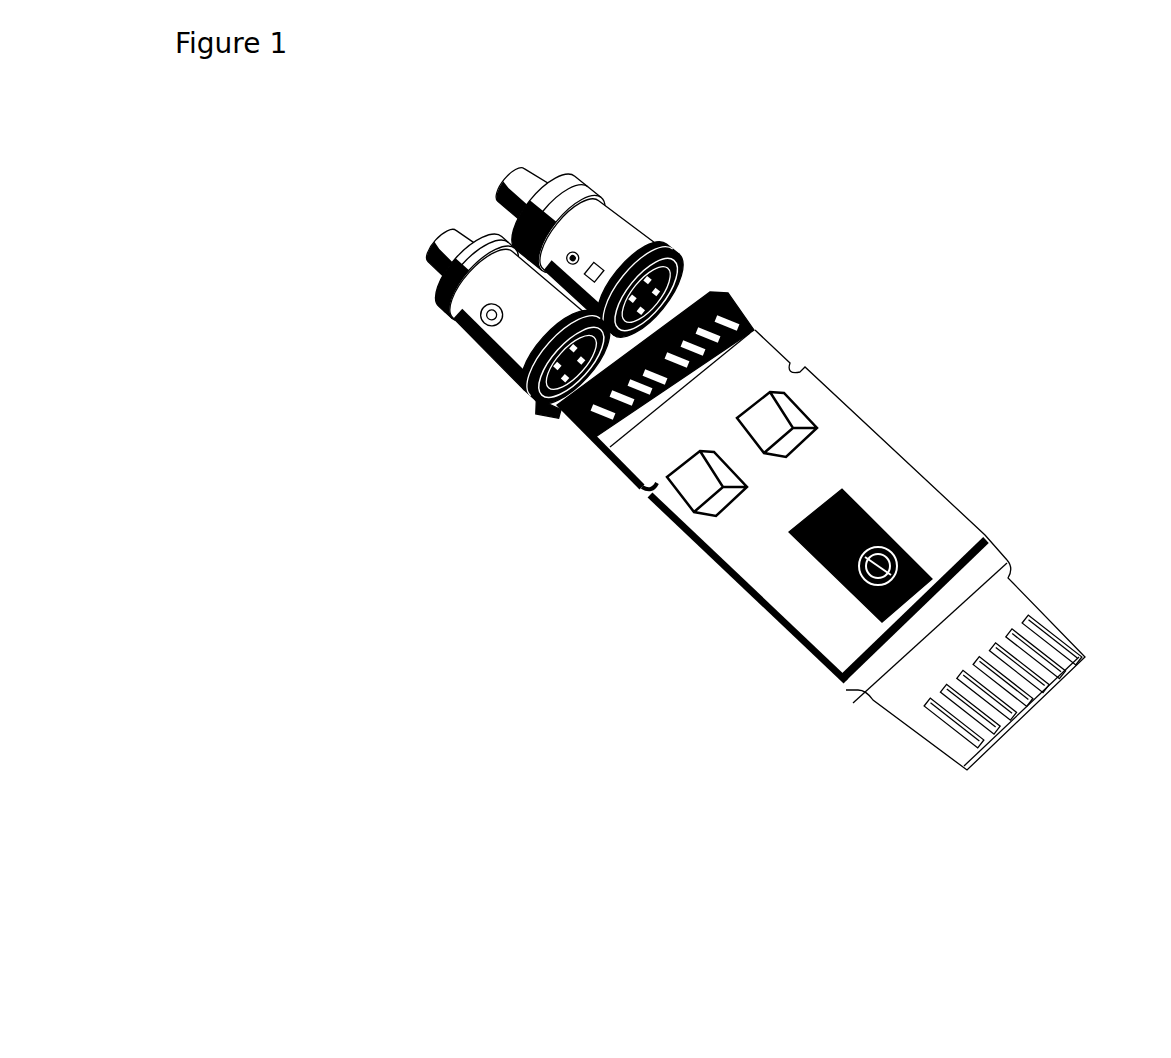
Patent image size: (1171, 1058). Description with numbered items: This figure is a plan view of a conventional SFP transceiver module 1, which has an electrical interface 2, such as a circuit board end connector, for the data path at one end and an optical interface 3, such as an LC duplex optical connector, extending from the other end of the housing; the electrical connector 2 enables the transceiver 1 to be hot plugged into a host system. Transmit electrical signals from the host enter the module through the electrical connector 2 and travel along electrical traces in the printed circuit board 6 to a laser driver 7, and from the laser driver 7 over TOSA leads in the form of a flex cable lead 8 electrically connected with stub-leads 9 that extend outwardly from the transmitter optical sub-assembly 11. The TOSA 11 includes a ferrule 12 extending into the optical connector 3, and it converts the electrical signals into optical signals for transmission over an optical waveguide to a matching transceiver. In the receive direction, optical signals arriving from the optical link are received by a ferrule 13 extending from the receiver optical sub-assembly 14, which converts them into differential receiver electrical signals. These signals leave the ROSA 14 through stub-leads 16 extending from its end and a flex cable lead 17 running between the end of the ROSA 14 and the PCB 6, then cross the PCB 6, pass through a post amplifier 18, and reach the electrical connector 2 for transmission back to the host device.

The SFP transceiver module 1 is at (923, 248).
The electrical interface 2 is at (1030, 692).
The optical interface 3 is at (492, 214).
The printed circuit board 6 is at (894, 503).
The laser driver 7 is at (780, 427).
The flex cable lead 8 is at (678, 314).
The stub-leads 9 is at (680, 292).
The transmitter optical sub-assembly 11 is at (632, 248).
The ferrule 12 is at (535, 178).
The ferrule 13 is at (438, 243).
The receiver optical sub-assembly 14 is at (546, 311).
The stub-leads 16 is at (543, 387).
The flex cable lead 17 is at (557, 407).
The post amplifier 18 is at (707, 490).